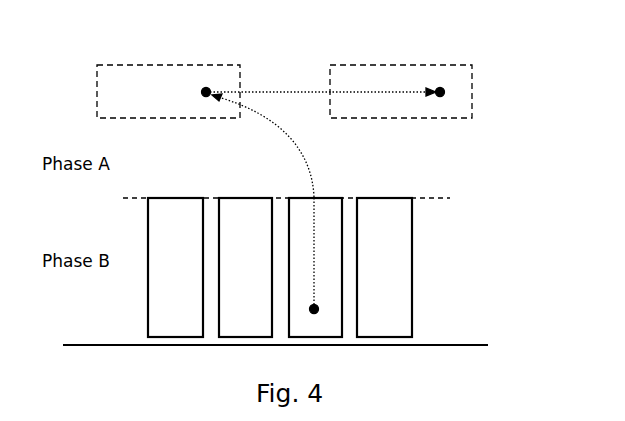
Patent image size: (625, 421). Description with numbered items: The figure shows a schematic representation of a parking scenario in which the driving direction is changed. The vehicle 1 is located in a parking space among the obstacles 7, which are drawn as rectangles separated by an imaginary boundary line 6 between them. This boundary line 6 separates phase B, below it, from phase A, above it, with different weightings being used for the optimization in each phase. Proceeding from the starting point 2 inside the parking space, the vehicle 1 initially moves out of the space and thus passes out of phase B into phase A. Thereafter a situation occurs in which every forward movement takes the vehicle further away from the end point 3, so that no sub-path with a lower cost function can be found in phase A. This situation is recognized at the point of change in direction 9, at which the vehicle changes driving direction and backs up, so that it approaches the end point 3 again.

The vehicle 1 is at (311, 244).
The starting position 2 is at (319, 308).
The end position 3 is at (446, 97).
The imaginary boundary line 6 is at (427, 198).
The obstacles 7 is at (182, 278).
The point of change in direction 9 is at (203, 88).